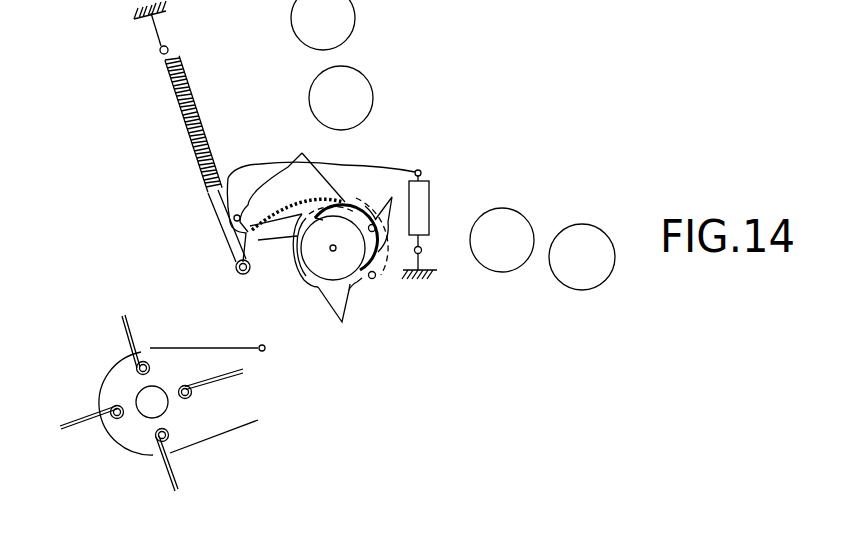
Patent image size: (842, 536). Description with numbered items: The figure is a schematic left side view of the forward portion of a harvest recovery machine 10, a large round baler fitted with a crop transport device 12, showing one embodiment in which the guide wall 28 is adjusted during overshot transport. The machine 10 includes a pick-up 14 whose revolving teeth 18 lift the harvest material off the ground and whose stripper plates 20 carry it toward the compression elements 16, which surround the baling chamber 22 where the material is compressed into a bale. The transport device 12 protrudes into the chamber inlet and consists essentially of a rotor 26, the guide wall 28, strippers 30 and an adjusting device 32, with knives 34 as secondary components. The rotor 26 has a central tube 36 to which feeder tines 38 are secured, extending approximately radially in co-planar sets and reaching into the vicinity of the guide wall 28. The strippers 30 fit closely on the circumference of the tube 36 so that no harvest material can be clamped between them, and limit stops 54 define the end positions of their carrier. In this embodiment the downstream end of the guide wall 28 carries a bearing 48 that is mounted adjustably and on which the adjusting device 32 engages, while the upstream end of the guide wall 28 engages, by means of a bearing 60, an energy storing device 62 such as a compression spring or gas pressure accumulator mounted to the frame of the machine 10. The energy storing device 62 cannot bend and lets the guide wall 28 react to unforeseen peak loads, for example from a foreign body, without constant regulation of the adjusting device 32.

The harvest recovery machine 10 is at (127, 209).
The crop transport device 12 is at (274, 308).
The pick-up 14 is at (202, 463).
The compression elements 16 is at (357, 68).
The teeth 18 is at (86, 421).
The stripper plates 20 is at (195, 346).
The baling chamber 22 is at (524, 101).
The rotor 26 is at (322, 306).
The guide wall 28 is at (343, 165).
The strippers 30 is at (358, 203).
The adjusting device 32 is at (430, 200).
The knives 34 is at (302, 153).
The tube 36 is at (360, 282).
The feeder tines 38 is at (350, 305).
The bearing 48 is at (421, 172).
The limit stops 54 is at (377, 277).
The bearing 60 is at (240, 271).
The energy storing device 62 is at (182, 123).